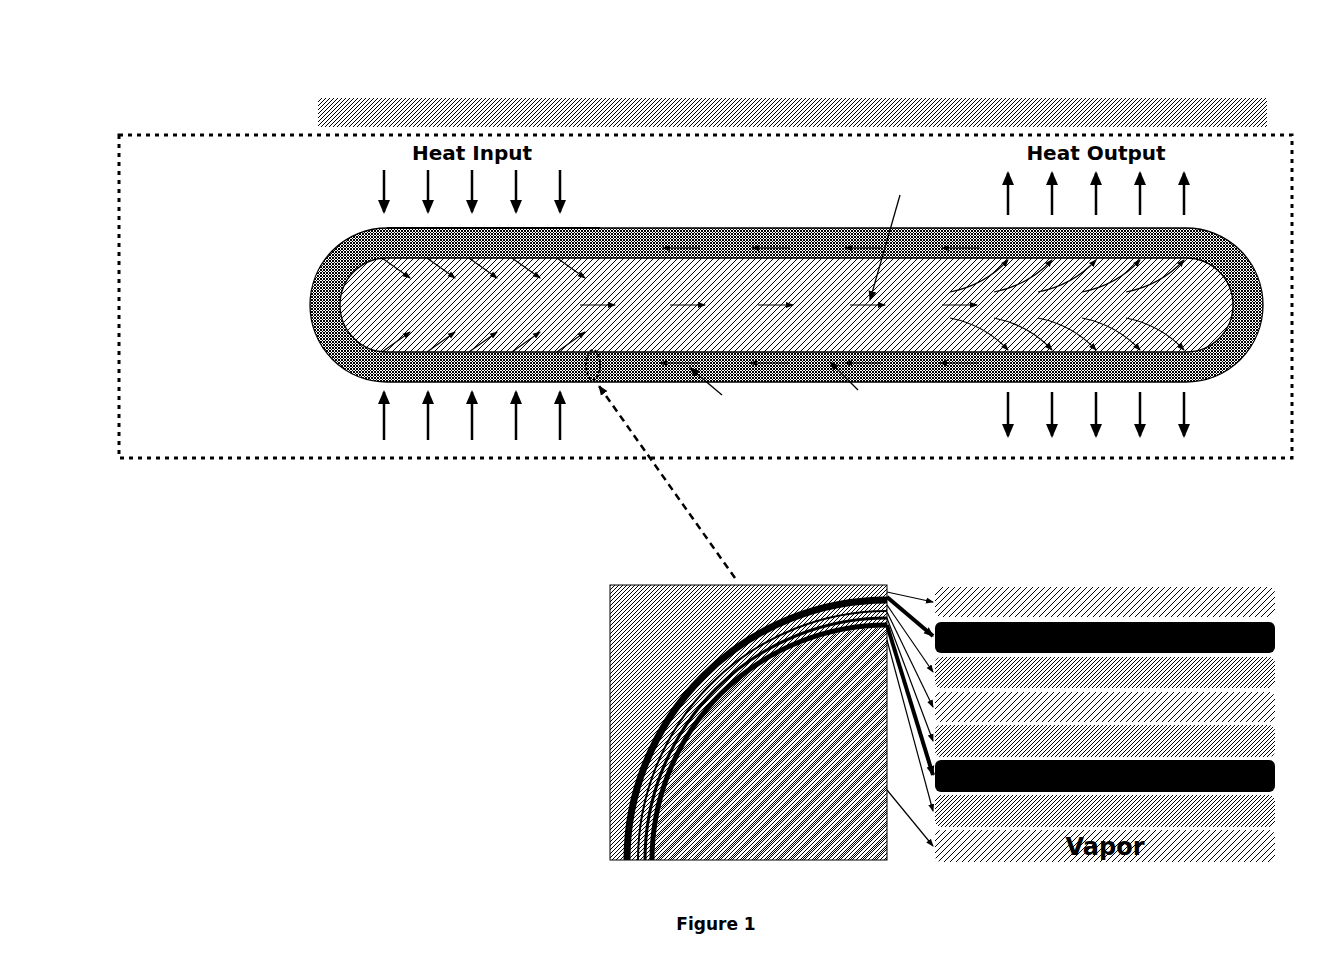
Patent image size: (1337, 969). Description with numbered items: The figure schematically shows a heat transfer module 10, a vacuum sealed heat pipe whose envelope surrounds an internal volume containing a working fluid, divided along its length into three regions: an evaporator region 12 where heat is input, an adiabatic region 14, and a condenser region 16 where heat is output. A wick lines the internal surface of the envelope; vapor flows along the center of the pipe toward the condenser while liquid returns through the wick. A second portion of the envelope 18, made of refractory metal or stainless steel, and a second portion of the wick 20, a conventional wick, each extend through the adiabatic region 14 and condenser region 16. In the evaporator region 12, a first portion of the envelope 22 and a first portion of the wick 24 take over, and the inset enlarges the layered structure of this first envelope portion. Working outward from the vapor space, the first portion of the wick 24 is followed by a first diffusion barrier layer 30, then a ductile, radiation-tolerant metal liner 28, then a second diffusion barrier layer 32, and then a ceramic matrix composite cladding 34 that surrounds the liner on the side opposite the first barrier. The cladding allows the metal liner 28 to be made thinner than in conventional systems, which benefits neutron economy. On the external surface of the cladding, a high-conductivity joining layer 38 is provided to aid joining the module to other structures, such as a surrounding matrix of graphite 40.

The heat transfer module 10 is at (168, 82).
The evaporator region 12 is at (477, 92).
The adiabatic region 14 is at (795, 97).
The condenser region 16 is at (1110, 98).
The second portion of the envelope 18 is at (652, 228).
The second portion of the wick 20 is at (786, 332).
The first portion of the envelope 22 is at (326, 242).
The first portion of the wick 24 is at (1278, 808).
The metal liner 28 is at (1278, 740).
The first diffusion barrier layer 30 is at (1278, 775).
The second diffusion barrier layer 32 is at (1278, 704).
The ceramic matrix composite cladding 34 is at (1278, 668).
The high-conductivity joining layer 38 is at (1278, 636).
The graphite 40 is at (1278, 600).